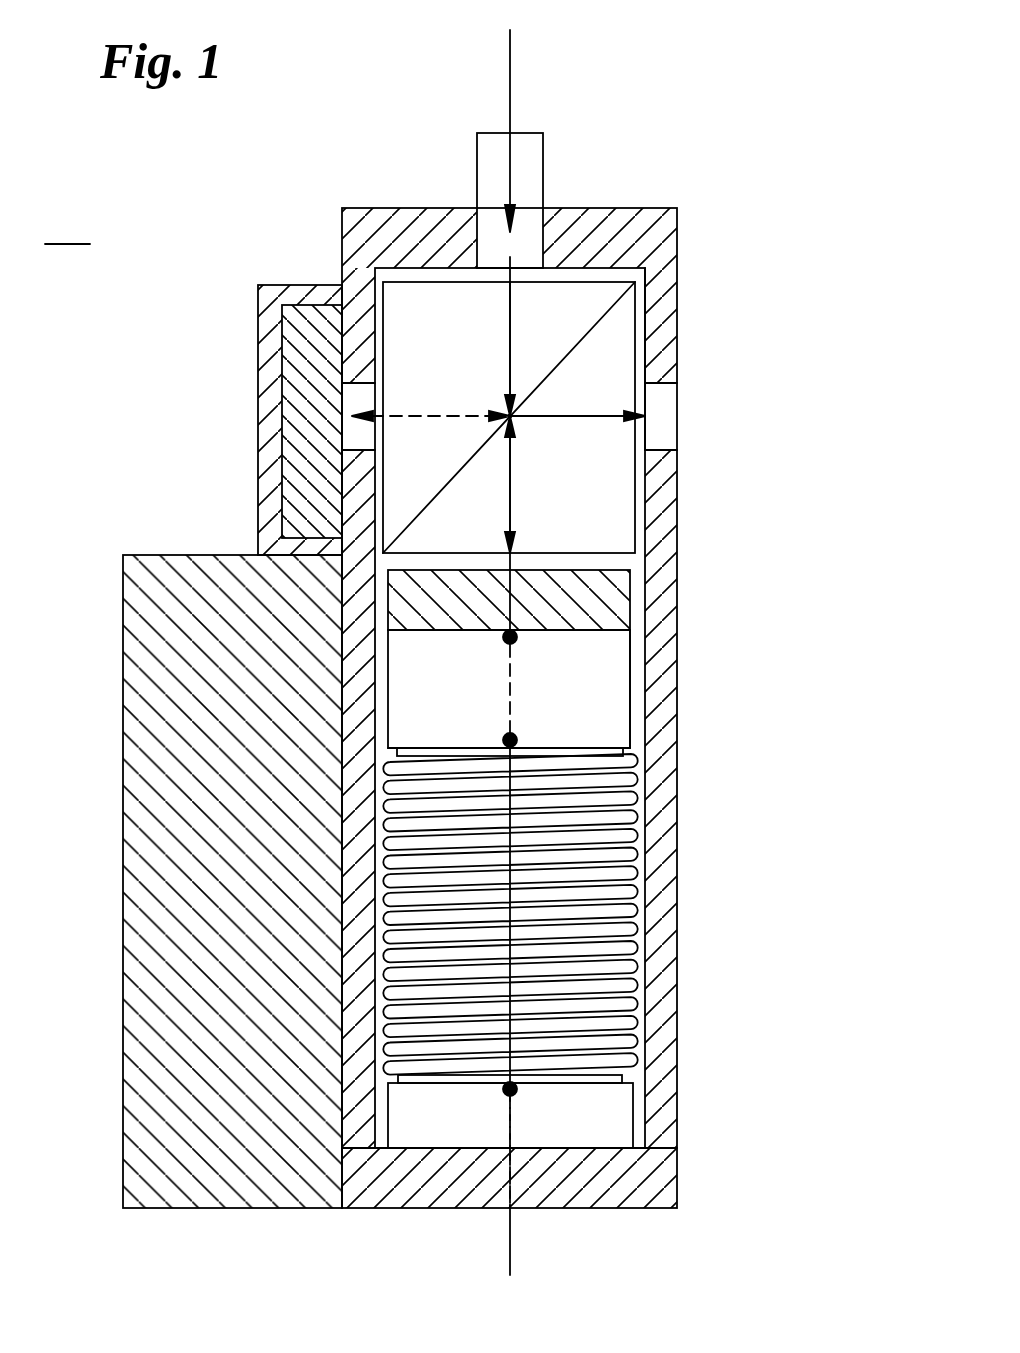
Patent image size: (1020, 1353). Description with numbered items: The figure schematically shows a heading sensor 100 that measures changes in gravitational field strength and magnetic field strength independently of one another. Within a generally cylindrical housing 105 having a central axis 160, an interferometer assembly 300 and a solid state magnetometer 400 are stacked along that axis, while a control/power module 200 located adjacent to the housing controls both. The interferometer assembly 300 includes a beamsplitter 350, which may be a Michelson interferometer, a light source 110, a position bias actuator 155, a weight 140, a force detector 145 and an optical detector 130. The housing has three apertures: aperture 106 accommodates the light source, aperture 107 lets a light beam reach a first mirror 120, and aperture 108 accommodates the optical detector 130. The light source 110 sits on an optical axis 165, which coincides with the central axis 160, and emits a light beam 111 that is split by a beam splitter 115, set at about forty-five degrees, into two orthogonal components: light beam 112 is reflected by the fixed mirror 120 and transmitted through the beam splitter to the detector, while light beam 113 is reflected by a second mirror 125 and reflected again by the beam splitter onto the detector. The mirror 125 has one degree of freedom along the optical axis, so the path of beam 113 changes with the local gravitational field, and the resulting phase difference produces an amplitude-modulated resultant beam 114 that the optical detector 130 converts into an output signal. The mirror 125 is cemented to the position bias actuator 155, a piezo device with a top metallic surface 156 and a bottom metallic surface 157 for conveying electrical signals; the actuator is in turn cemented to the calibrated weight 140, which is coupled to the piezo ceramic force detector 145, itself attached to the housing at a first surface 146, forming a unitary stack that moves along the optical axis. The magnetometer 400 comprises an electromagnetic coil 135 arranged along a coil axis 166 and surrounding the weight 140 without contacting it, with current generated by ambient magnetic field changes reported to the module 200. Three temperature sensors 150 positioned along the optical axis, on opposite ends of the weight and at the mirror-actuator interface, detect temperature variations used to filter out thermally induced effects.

The heading sensor 100 is at (67, 229).
The housing 105 is at (677, 232).
The aperture 106 is at (548, 228).
The aperture 107 is at (358, 383).
The aperture 108 is at (673, 388).
The light source 110 is at (543, 152).
The light beam 111 is at (510, 303).
The light beam 112 is at (453, 412).
The light beam 113 is at (507, 507).
The resultant beam 114 is at (545, 425).
The beam splitter 115 is at (577, 348).
The first mirror 120 is at (318, 422).
The second mirror 125 is at (547, 612).
The optical detector 130 is at (658, 426).
The electromagnetic coil 135 is at (612, 892).
The weight 140 is at (607, 1073).
The force detector 145 is at (607, 1125).
The first surface 146 is at (440, 1152).
The temperature sensors 150 is at (512, 638).
The position bias actuator 155 is at (593, 702).
The top metallic surface 156 is at (430, 632).
The bottom metallic surface 157 is at (437, 748).
The central axis 160 is at (513, 52).
The optical axis 165 is at (507, 712).
The coil axis 166 is at (507, 1128).
The control/power module 200 is at (195, 1000).
The interferometer assembly 300 is at (598, 523).
The beamsplitter 350 is at (415, 463).
The solid state magnetometer 400 is at (612, 973).